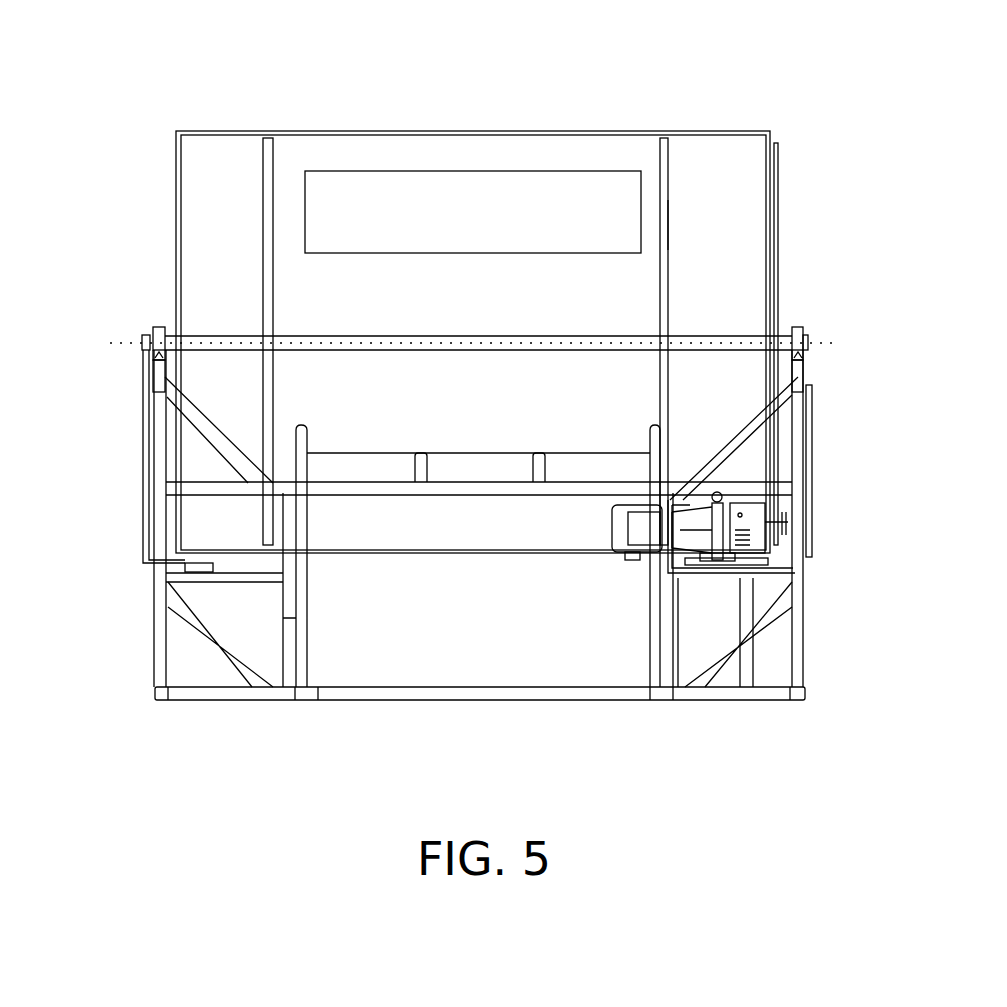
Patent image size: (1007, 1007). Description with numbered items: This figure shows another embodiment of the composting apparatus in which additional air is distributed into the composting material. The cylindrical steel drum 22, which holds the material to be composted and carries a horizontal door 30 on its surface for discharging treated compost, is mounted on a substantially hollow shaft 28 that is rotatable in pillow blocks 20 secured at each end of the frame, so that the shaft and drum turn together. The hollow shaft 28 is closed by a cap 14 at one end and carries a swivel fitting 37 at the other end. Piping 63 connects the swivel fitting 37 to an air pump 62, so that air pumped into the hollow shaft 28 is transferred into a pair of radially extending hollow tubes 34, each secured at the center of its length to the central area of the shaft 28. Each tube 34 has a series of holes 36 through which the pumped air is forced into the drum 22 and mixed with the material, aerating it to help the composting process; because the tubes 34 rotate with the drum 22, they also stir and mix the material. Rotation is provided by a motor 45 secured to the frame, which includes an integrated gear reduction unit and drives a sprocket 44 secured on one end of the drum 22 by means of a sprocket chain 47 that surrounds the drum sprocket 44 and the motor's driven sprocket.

The cap 14 is at (813, 348).
The pillow blocks 20 is at (153, 327).
The drum 22 is at (205, 128).
The shaft 28 is at (703, 332).
The door 30 is at (412, 215).
The radially extending tubes 34 is at (268, 136).
The holes 36 is at (663, 207).
The swivel fitting 37 is at (143, 350).
The sprocket 44 is at (778, 146).
The motor 45 is at (720, 562).
The sprocket chain 47 is at (778, 449).
The air pump 62 is at (200, 572).
The piping 63 is at (143, 552).